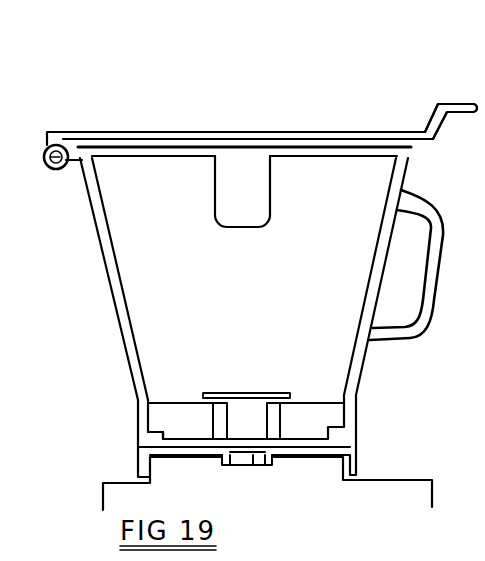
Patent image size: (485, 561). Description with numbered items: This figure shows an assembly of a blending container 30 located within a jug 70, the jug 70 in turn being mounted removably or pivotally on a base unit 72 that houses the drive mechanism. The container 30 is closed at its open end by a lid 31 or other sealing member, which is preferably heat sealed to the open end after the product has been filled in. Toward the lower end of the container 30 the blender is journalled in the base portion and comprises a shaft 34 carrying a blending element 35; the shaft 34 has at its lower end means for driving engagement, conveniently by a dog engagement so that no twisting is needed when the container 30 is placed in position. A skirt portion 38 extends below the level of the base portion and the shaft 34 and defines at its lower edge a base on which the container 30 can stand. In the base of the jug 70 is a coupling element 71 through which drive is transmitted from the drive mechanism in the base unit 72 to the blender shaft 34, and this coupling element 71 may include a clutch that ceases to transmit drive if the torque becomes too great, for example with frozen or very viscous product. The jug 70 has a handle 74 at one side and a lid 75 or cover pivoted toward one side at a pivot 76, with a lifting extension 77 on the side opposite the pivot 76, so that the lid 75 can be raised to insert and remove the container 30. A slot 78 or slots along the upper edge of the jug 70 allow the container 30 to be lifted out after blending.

The container 30 is at (128, 295).
The lid 31 is at (320, 158).
The shaft 34 is at (258, 421).
The blending element 35 is at (275, 392).
The skirt portion 38 is at (162, 422).
The jug 70 is at (103, 289).
The coupling element 71 is at (270, 462).
The base unit 72 is at (402, 480).
The handle 74 is at (431, 290).
The lid 75 is at (283, 132).
The pivot 76 is at (43, 153).
The lifting extension 77 is at (450, 102).
The slot 78 is at (213, 203).